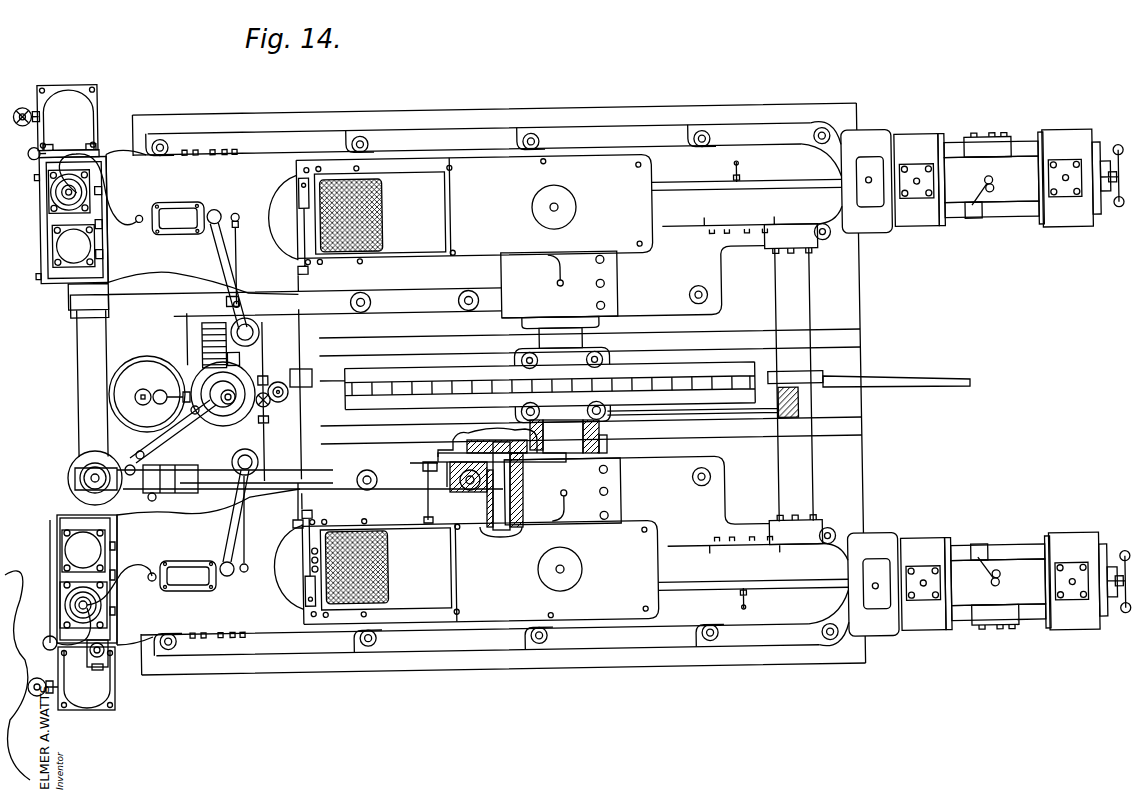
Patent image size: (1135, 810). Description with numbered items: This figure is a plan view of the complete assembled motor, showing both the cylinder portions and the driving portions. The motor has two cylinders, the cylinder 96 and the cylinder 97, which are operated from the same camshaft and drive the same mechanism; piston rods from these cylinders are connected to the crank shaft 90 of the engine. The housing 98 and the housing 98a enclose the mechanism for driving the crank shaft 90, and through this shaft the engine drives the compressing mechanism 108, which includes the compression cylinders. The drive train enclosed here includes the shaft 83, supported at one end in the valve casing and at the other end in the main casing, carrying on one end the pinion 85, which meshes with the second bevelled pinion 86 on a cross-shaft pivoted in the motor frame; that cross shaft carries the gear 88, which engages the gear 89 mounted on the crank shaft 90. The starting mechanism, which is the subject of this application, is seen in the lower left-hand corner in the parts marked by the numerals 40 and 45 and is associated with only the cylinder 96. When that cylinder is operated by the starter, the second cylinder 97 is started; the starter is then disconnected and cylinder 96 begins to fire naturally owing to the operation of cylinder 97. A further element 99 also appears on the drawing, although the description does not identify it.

The starting mechanism part 40 is at (92, 668).
The starting mechanism part 45 is at (116, 671).
The shaft 83 is at (468, 478).
The pinion 85 is at (491, 532).
The second bevelled pinion 86 is at (477, 437).
The gear 88 is at (535, 445).
The gear 89 is at (598, 471).
The crank shaft 90 is at (578, 446).
The cylinder 96 is at (272, 622).
The cylinder 97 is at (255, 168).
The housing 98 is at (615, 180).
The housing 98a is at (610, 592).
The rack 99 is at (728, 368).
The compressing mechanism 108 is at (965, 164).